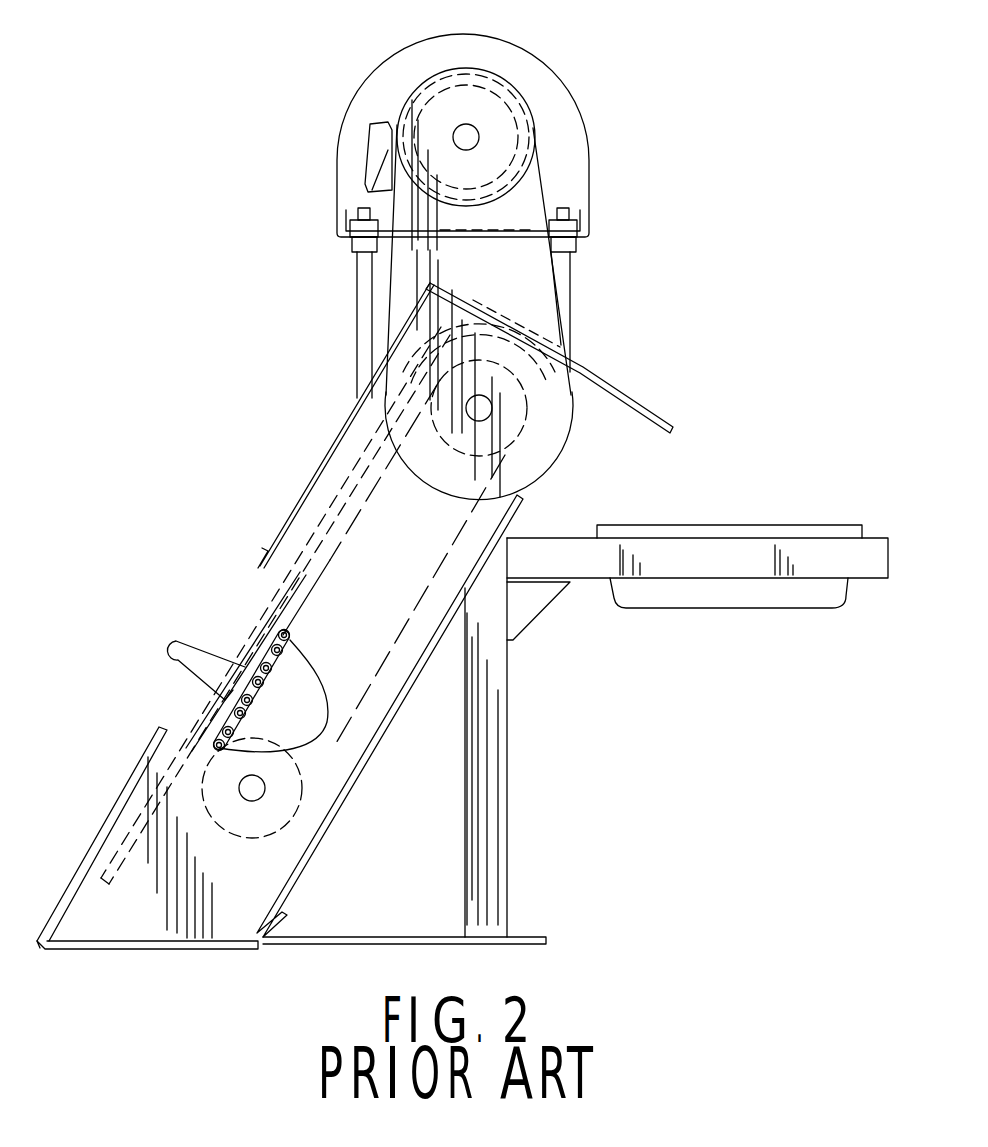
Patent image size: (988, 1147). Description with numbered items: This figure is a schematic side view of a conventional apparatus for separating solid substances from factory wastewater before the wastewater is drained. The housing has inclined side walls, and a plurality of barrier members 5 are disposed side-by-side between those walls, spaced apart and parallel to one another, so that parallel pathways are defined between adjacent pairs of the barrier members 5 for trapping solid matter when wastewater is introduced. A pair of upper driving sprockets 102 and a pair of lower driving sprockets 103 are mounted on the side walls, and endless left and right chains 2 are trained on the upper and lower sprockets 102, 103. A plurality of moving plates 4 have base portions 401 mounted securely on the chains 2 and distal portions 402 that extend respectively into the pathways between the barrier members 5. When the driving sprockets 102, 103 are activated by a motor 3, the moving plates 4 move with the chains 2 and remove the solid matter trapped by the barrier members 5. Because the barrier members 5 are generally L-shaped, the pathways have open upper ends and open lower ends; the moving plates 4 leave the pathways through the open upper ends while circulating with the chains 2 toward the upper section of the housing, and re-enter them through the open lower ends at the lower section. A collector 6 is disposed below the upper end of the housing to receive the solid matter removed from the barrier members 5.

The chain 2 is at (270, 620).
The motor 3 is at (514, 110).
The moving plate 4 is at (183, 634).
The base portion 401 is at (245, 665).
The distal portion 402 is at (167, 646).
The barrier member 5 is at (178, 715).
The collector 6 is at (740, 597).
The upper driving sprocket 102 is at (560, 446).
The lower driving sprocket 103 is at (247, 820).